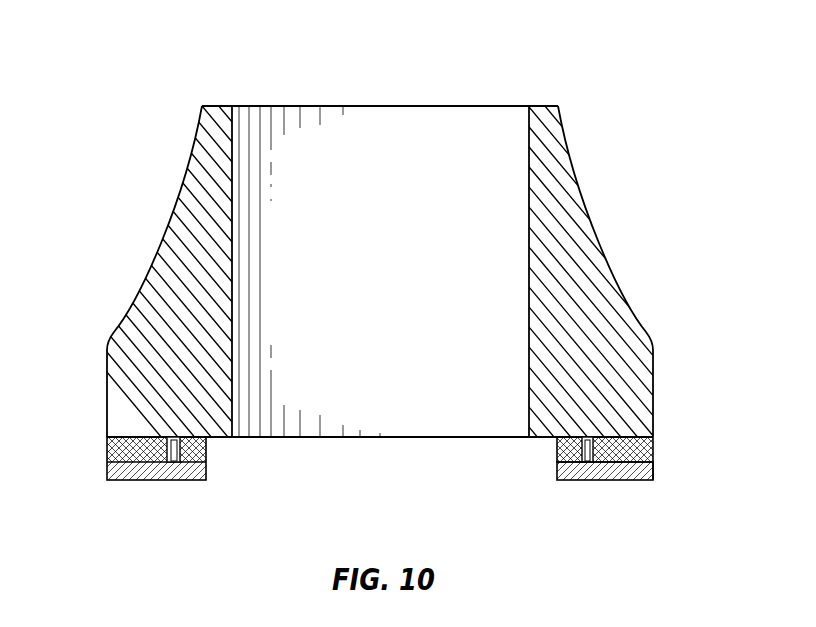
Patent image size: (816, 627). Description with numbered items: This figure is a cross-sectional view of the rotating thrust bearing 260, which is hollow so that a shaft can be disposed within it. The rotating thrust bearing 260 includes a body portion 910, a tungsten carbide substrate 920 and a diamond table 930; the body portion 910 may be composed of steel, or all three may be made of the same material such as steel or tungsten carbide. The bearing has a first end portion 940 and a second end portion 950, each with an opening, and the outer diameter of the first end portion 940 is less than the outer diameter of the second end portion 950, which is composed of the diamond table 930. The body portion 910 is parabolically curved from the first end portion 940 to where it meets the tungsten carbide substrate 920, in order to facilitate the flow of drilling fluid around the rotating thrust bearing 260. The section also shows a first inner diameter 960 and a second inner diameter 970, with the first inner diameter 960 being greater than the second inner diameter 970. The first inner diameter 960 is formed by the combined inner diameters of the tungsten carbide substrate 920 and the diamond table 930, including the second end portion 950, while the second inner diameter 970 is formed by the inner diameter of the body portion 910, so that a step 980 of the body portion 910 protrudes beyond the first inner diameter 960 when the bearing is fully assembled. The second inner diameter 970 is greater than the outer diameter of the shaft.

The rotating thrust bearing 260 is at (408, 287).
The body portion 910 is at (567, 212).
The tungsten carbide substrate 920 is at (645, 455).
The diamond table 930 is at (645, 470).
The first end portion 940 is at (542, 107).
The second end portion 950 is at (168, 501).
The first inner diameter 960 is at (206, 452).
The second inner diameter 970 is at (232, 385).
The step 980 is at (543, 438).